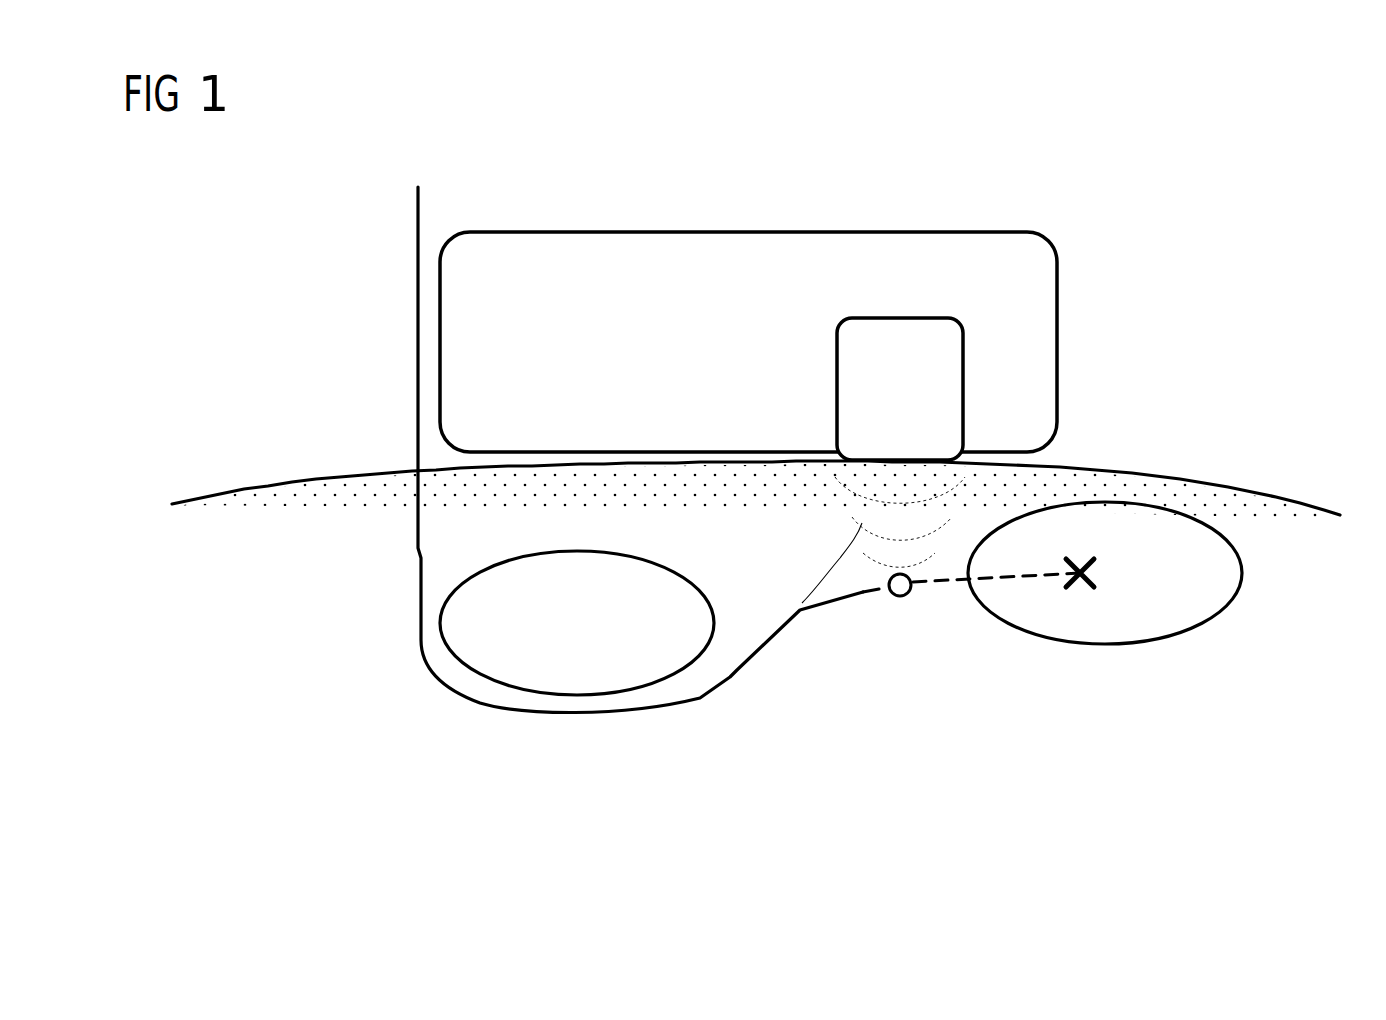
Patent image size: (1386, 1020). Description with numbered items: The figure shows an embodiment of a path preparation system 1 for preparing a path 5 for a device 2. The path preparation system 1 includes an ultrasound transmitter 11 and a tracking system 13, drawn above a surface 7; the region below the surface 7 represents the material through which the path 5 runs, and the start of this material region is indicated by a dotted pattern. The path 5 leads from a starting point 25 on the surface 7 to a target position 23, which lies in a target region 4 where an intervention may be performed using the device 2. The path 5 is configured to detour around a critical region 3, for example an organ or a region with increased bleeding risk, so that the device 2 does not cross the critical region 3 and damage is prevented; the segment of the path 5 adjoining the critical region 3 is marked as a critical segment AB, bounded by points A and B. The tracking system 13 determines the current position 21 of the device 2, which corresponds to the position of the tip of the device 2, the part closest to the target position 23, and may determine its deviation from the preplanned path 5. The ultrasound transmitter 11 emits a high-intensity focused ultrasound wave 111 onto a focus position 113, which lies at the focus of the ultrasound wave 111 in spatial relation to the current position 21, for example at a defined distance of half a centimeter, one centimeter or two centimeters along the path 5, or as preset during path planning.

The path preparation system 1 is at (300, 245).
The device 2 is at (497, 707).
The critical region 3 is at (573, 680).
The target region 4 is at (1242, 575).
The path 5 is at (947, 581).
The surface 7 is at (244, 489).
The ultrasound transmitter 11 is at (898, 330).
The tracking system 13 is at (775, 232).
The current position 21 is at (863, 592).
The target position 23 is at (1083, 588).
The starting point 25 is at (418, 471).
The high-intensity focused ultrasound wave 111 is at (803, 603).
The focus position 113 is at (897, 597).
The start of critical segment AB A is at (415, 567).
The end of critical segment AB B is at (729, 690).